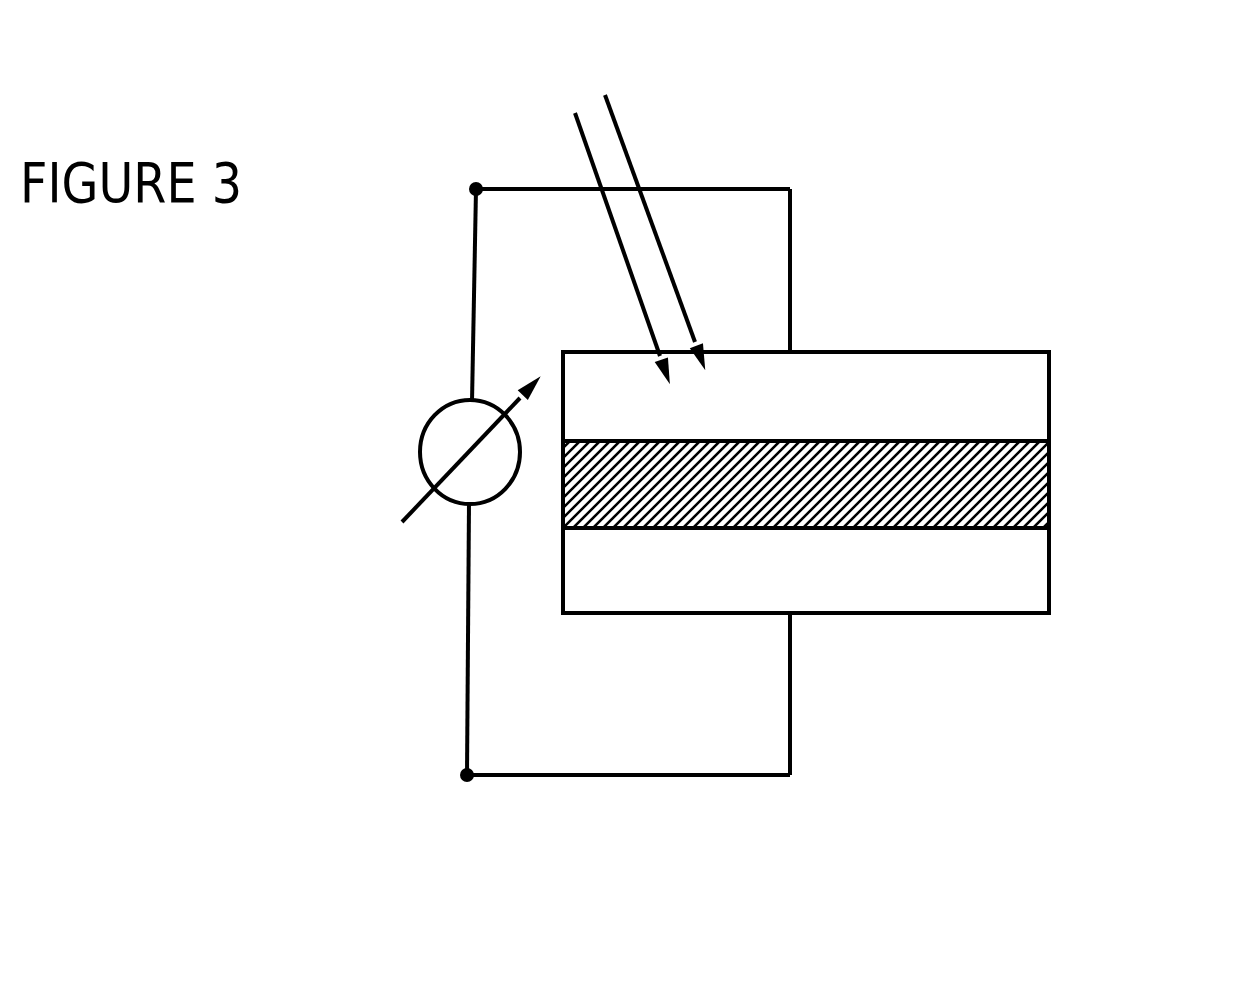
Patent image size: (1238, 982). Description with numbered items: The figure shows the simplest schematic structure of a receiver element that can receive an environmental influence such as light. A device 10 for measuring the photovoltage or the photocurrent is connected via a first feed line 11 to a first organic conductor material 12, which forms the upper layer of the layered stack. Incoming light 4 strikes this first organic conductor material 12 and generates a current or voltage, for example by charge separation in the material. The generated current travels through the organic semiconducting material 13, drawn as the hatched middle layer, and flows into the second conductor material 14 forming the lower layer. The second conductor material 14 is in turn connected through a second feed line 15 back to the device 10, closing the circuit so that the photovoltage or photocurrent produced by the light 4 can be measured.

The light 4 is at (634, 178).
The device for measuring the photovoltage or the photocurrent 10 is at (404, 460).
The first feed line 11 is at (715, 187).
The first organic conductor material 12 is at (923, 397).
The organic semiconducting material 13 is at (1007, 498).
The second conductor material 14 is at (923, 585).
The second feed line 15 is at (637, 779).